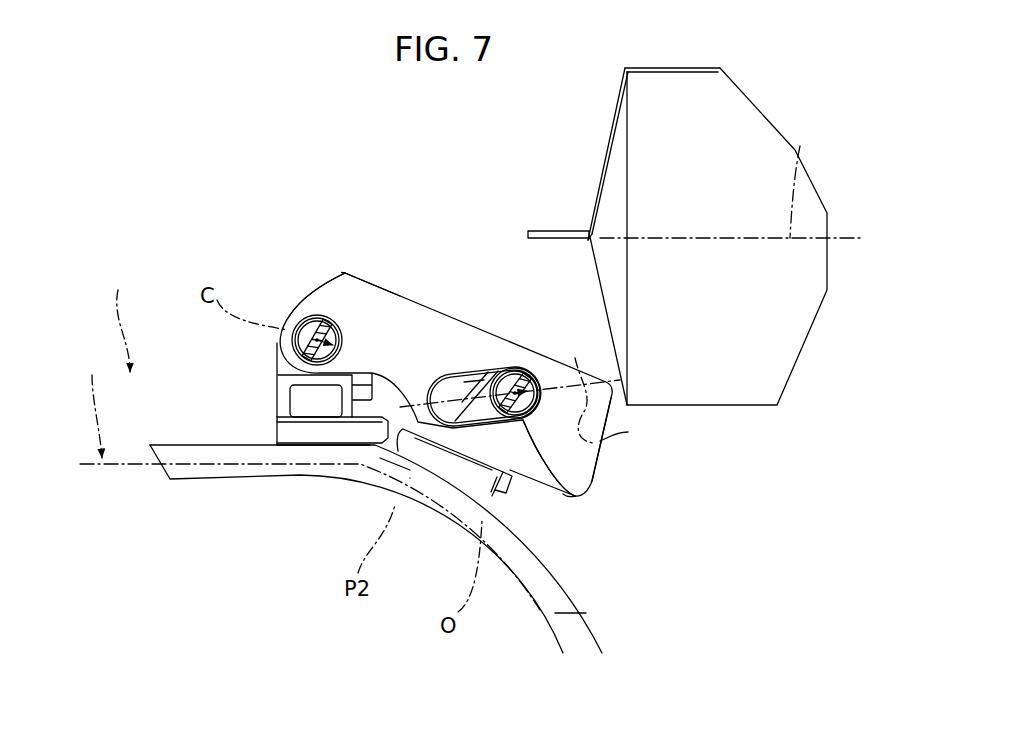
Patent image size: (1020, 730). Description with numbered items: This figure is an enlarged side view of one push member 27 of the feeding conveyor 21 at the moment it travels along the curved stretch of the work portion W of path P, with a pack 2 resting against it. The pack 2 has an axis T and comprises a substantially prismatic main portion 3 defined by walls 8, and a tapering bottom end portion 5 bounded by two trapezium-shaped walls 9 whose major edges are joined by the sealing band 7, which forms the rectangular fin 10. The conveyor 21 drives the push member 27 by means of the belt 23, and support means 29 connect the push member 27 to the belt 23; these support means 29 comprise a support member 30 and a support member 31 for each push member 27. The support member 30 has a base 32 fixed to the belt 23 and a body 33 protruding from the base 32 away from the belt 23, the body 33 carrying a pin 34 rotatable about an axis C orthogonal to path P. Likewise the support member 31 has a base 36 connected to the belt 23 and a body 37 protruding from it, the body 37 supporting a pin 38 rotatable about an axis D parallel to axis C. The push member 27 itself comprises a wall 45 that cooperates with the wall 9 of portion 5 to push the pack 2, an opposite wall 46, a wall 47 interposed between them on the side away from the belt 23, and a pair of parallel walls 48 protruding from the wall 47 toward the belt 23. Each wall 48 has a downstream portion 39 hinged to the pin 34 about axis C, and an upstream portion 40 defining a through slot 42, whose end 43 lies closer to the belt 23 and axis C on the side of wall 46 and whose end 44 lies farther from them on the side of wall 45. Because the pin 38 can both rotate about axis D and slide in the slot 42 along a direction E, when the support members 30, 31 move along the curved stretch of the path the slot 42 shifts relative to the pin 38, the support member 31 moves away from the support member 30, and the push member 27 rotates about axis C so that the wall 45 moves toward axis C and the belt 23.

The pack 2 is at (731, 105).
The main portion 3 is at (678, 206).
The bottom end portion 5 is at (576, 143).
The sealing band 7 is at (579, 226).
The wall 8 is at (653, 66).
The wall 9 is at (602, 120).
The fin 10 is at (560, 231).
The feeding conveyor 21 is at (341, 465).
The belt 23 is at (537, 602).
The push member 27 is at (306, 257).
The support means 29 is at (392, 492).
The support member 30 is at (322, 446).
The support member 31 is at (410, 478).
The base 32 is at (283, 435).
The body 33 is at (283, 373).
The pin 34 is at (322, 317).
The base 36 is at (451, 480).
The body 37 is at (482, 490).
The pin 38 is at (578, 497).
The downstream portion 39 is at (290, 387).
The upstream portion 40 is at (531, 464).
The through slot 42 is at (464, 381).
The end 43 is at (482, 316).
The end 44 is at (483, 368).
The wall 45 is at (606, 460).
The wall 46 is at (286, 308).
The wall 47 is at (357, 268).
The wall 48 is at (435, 357).